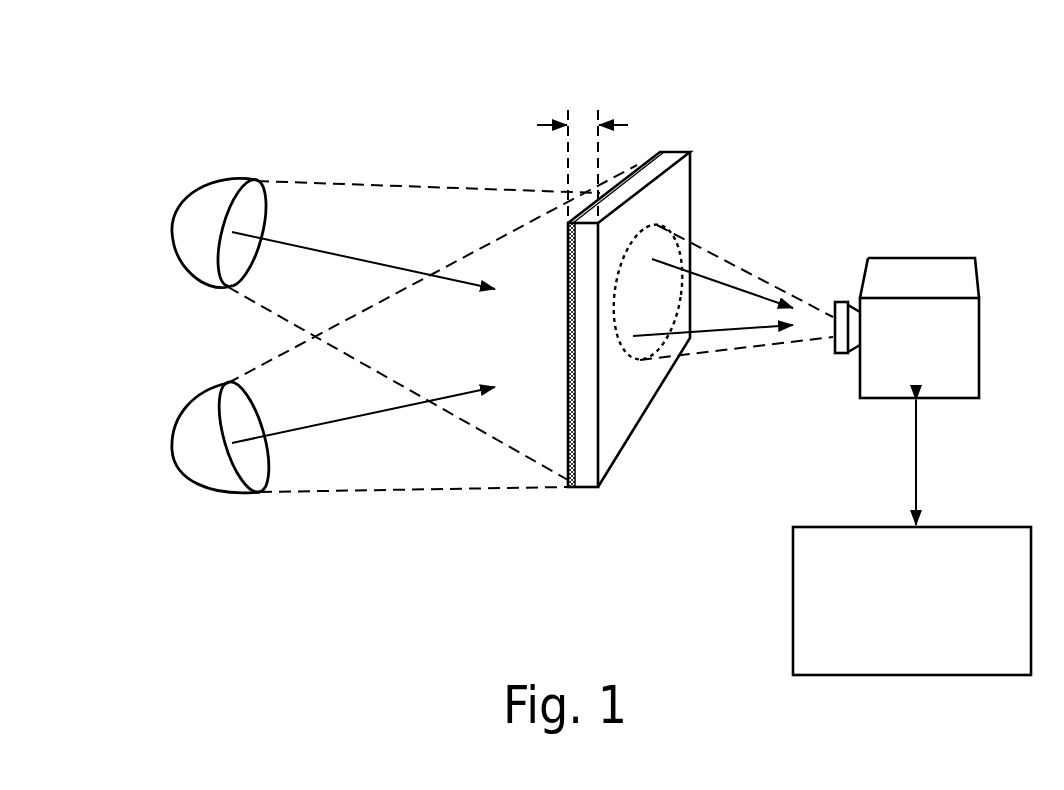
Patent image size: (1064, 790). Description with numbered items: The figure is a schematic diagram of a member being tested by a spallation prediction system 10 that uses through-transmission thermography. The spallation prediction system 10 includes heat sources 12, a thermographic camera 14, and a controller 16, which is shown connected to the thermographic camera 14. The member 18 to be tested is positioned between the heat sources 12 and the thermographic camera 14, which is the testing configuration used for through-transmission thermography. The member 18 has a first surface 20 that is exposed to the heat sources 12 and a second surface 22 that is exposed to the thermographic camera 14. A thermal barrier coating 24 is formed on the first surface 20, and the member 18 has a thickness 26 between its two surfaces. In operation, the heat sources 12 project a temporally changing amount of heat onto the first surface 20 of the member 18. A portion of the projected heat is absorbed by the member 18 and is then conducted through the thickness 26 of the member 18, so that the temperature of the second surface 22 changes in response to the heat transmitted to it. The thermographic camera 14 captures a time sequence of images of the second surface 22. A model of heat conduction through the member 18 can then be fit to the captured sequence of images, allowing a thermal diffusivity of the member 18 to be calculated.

The spallation prediction system 10 is at (842, 106).
The heat source 12 is at (198, 182).
The thermographic camera 14 is at (978, 272).
The controller 16 is at (912, 537).
The member 18 is at (585, 488).
The first surface 20 is at (565, 265).
The second surface 22 is at (600, 237).
The thermal barrier coating 24 is at (568, 443).
The thickness 26 is at (614, 123).